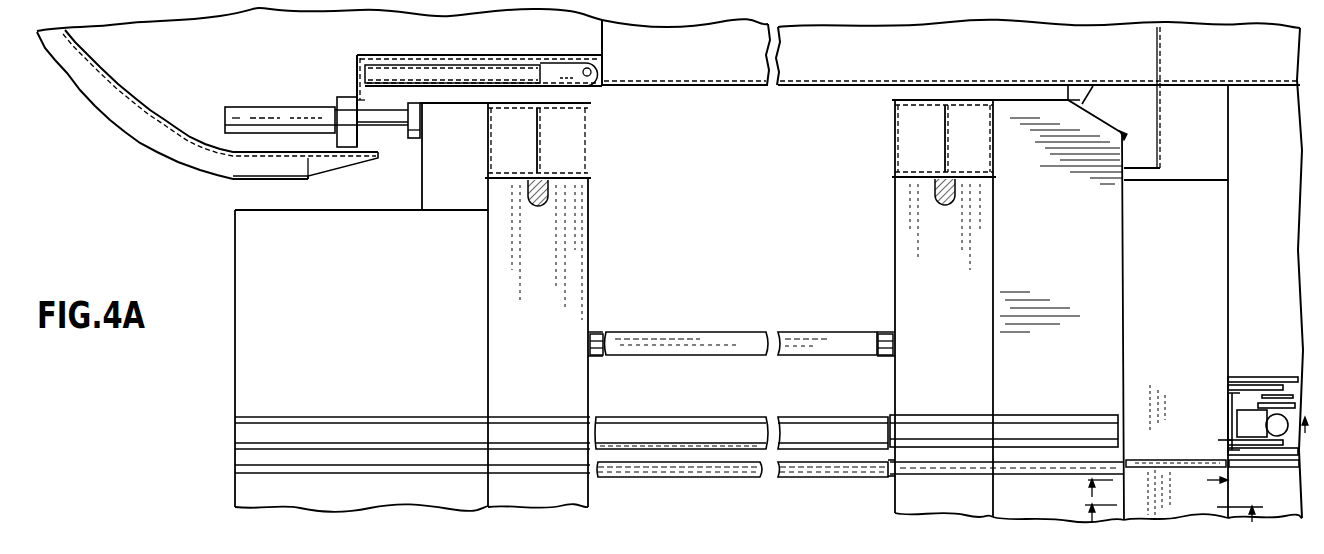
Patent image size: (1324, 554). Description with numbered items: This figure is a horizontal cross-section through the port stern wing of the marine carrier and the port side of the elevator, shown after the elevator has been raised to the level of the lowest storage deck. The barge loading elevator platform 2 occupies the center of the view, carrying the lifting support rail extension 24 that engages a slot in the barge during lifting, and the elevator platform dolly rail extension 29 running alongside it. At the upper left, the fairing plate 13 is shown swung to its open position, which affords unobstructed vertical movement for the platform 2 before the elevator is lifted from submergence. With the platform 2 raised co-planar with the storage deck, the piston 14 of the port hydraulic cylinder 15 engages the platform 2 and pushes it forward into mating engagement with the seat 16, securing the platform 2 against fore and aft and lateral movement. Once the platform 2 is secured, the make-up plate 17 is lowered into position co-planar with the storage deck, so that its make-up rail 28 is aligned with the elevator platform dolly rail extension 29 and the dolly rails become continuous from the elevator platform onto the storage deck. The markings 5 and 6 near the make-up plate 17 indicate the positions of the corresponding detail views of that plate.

The barge loading elevator platform 2 is at (461, 146).
The reference position/direction 5 is at (1181, 500).
The locking mechanism / direction 6 is at (1191, 439).
The fairing plate 13 is at (492, 68).
The piston 14 is at (347, 115).
The port hydraulic cylinder 15 is at (276, 113).
The seat 16 is at (1110, 123).
The make-up plate 17 is at (1203, 368).
The lifting support rail extension 24 is at (475, 426).
The make-up rail 28 is at (1177, 461).
The elevator platform dolly rail extension 29 is at (467, 471).